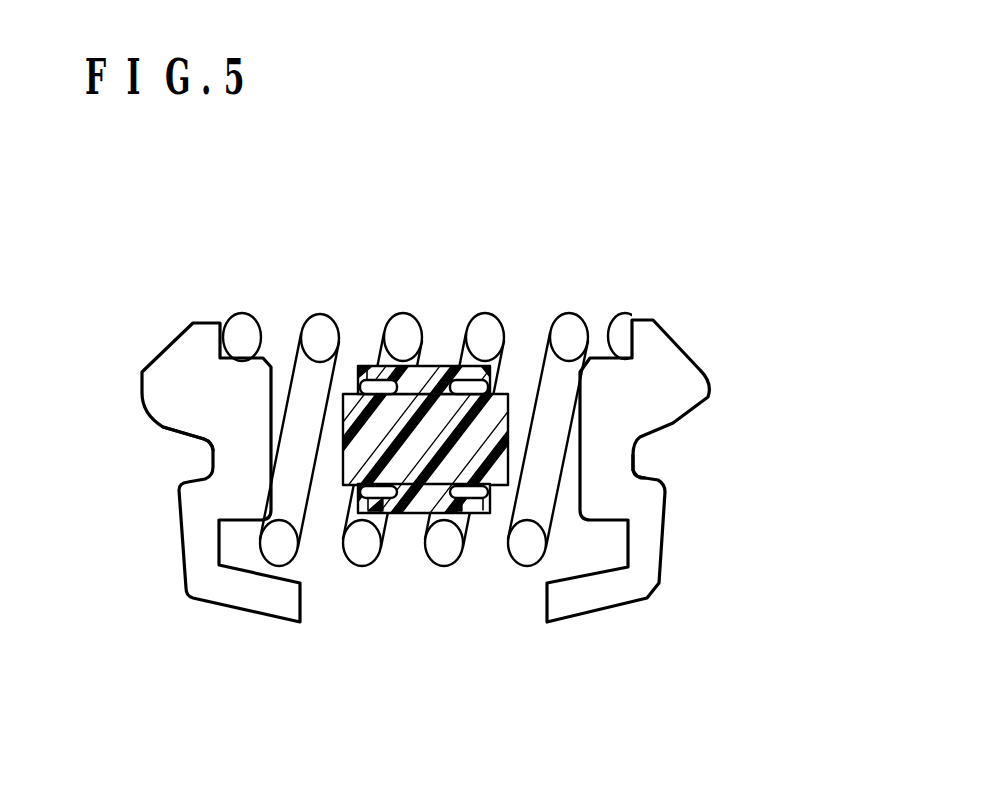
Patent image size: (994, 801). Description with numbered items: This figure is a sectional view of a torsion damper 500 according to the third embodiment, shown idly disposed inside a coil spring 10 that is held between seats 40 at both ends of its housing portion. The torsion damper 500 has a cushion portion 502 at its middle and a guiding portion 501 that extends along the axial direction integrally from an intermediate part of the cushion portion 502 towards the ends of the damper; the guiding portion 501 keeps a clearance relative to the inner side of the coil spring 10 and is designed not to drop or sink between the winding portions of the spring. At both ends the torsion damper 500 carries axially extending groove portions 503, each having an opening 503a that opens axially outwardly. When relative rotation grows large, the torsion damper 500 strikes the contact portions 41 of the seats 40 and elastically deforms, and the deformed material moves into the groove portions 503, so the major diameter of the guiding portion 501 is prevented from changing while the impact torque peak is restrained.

The coil spring 10 is at (242, 327).
The seat 40 is at (190, 392).
The contact portion 41 is at (268, 392).
The torsion damper 500 is at (427, 370).
The guiding portion 501 is at (372, 365).
The cushion portion 502 is at (530, 393).
The groove portion 503 is at (472, 517).
The opening 503a is at (365, 370).